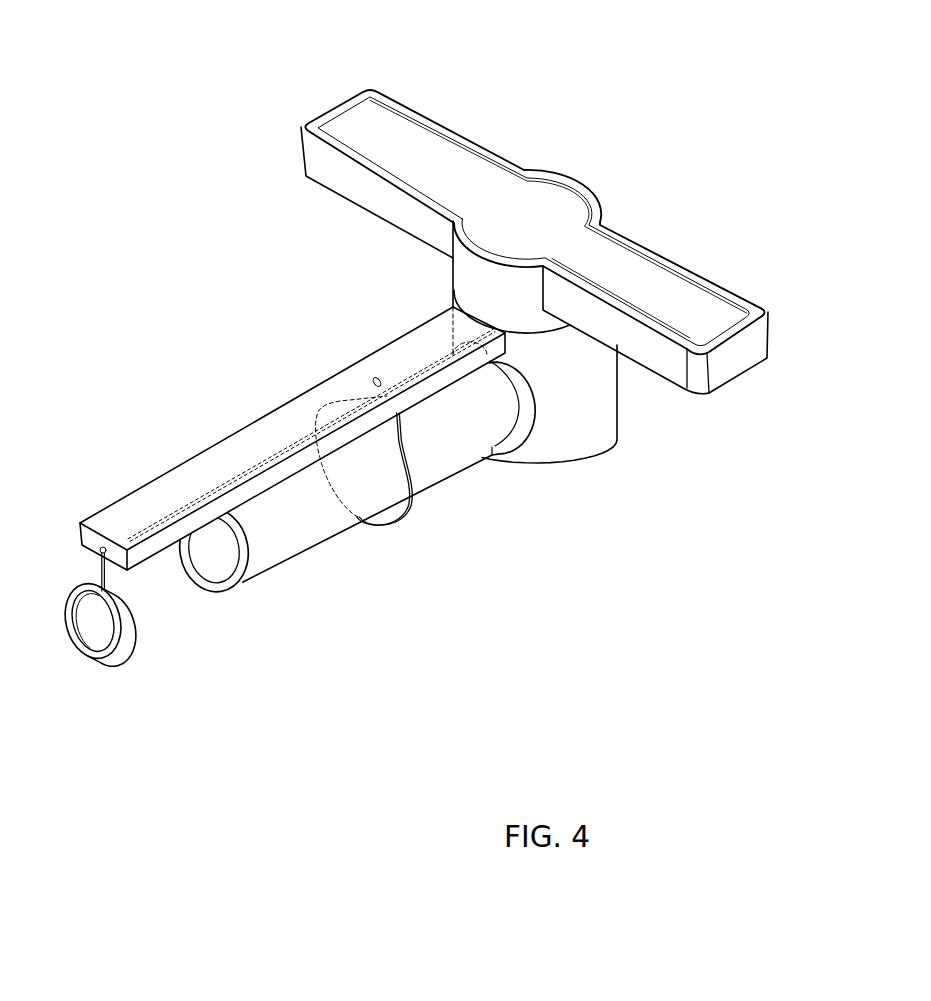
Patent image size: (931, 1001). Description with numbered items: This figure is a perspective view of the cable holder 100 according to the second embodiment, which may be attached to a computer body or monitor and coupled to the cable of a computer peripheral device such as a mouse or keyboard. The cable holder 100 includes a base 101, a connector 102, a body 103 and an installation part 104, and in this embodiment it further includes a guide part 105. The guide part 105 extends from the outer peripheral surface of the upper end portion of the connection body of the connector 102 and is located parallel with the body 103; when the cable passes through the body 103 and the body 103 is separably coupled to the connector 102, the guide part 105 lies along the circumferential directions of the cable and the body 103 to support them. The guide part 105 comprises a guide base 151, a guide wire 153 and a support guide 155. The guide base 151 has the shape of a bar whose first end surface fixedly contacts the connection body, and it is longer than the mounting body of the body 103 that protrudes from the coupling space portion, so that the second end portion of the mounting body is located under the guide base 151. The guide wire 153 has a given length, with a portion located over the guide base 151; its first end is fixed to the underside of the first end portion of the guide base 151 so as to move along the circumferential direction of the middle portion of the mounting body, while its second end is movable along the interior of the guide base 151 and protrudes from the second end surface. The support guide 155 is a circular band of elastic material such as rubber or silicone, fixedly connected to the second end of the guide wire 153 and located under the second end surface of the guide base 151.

The cable holder 100 is at (532, 28).
The base 101 is at (742, 388).
The connector 102 is at (630, 447).
The body 103 is at (322, 560).
The installation part 104 is at (665, 272).
The guide part 105 is at (163, 458).
The guide base 151 is at (273, 421).
The guide wire 153 is at (407, 513).
The support guide 155 is at (130, 638).